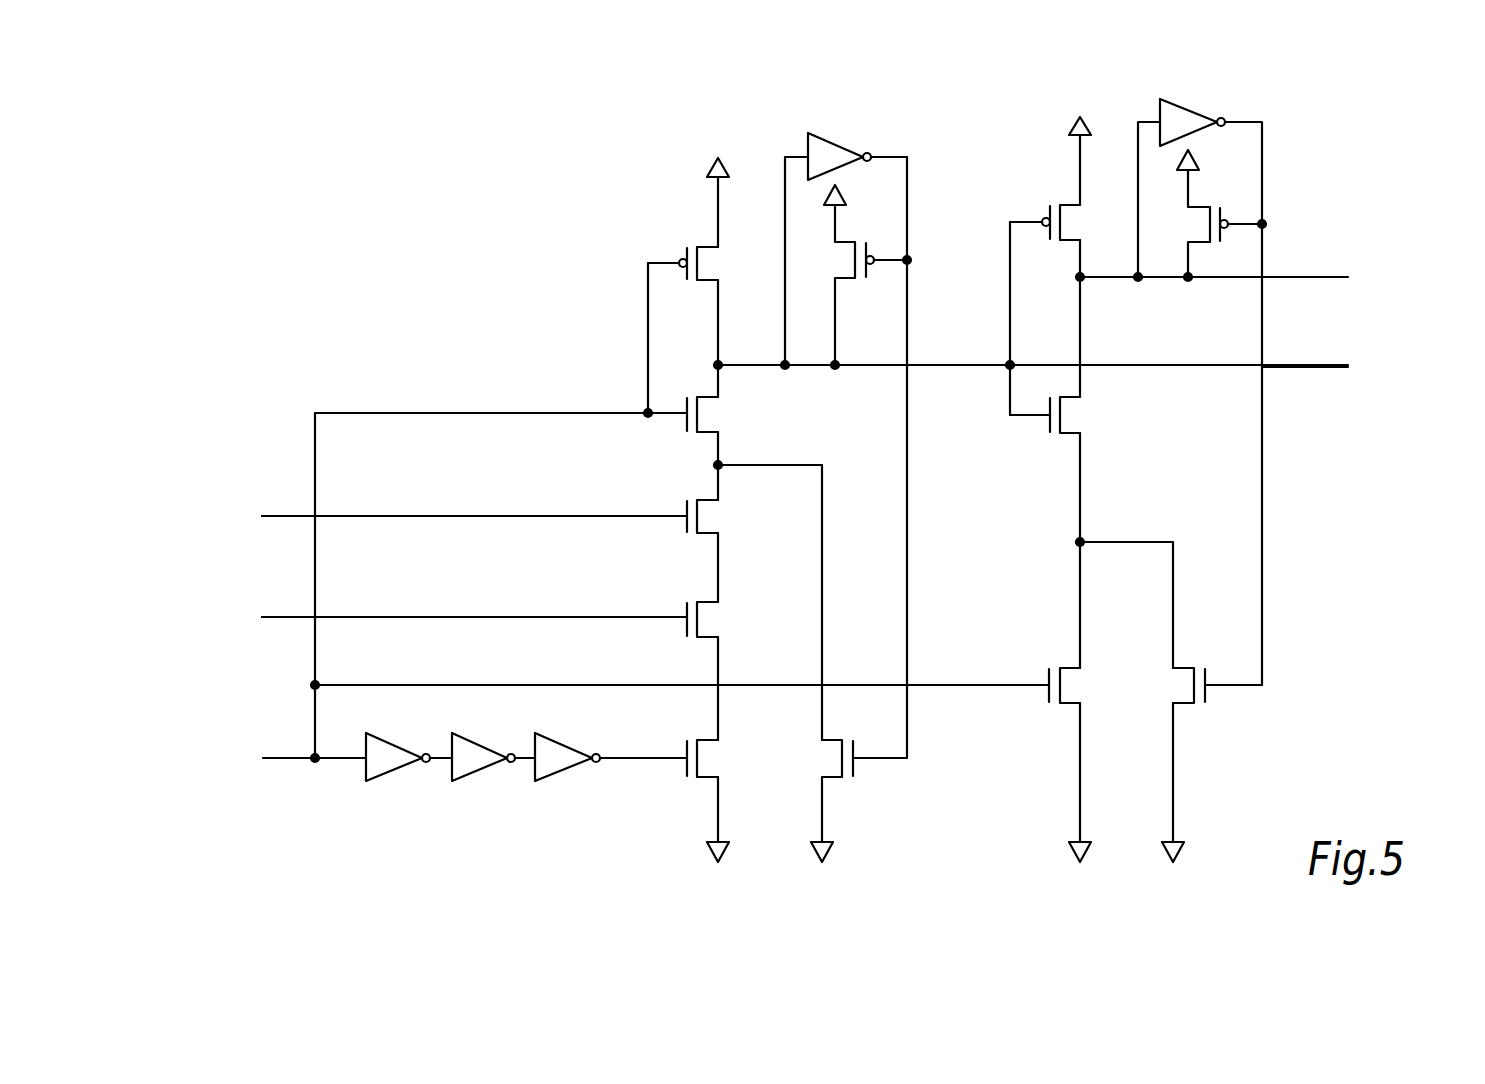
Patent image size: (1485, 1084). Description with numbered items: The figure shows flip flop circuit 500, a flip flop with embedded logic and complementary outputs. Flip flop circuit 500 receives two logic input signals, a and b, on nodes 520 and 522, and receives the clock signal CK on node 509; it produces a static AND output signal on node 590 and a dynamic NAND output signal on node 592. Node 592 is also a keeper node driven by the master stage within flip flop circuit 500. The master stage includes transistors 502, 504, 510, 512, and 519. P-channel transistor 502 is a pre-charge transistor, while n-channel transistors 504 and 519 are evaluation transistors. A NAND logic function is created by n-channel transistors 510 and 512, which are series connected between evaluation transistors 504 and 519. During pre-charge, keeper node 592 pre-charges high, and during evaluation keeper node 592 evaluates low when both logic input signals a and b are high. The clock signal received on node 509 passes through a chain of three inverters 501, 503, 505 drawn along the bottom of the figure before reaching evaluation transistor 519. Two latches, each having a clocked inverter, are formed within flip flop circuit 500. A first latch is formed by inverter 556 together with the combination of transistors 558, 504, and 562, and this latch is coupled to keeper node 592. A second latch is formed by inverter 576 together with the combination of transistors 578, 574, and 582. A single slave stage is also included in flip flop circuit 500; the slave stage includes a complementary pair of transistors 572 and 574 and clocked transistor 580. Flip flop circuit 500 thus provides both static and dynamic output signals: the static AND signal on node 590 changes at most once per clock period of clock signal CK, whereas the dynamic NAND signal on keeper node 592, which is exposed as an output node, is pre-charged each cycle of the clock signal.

The flip flop circuit 500 is at (270, 133).
The inverter 501 is at (394, 772).
The p-channel transistor 502 is at (700, 268).
The inverter 503 is at (479, 772).
The n-channel transistor 504 is at (700, 418).
The inverter 505 is at (564, 772).
The node 509 is at (289, 764).
The n-channel transistor 510 is at (700, 520).
The n-channel transistor 512 is at (700, 622).
The n-channel transistor 519 is at (700, 762).
The node 520 is at (273, 513).
The node 522 is at (273, 614).
The inverter 556 is at (835, 140).
The transistor 558 is at (853, 265).
The transistor 562 is at (841, 768).
The transistor 572 is at (1062, 226).
The transistor 574 is at (1062, 418).
The inverter 576 is at (1190, 106).
The transistor 578 is at (1209, 231).
The clocked transistor 580 is at (1062, 688).
The transistor 582 is at (1193, 698).
The node 590 is at (1325, 276).
The node 592 is at (1324, 370).